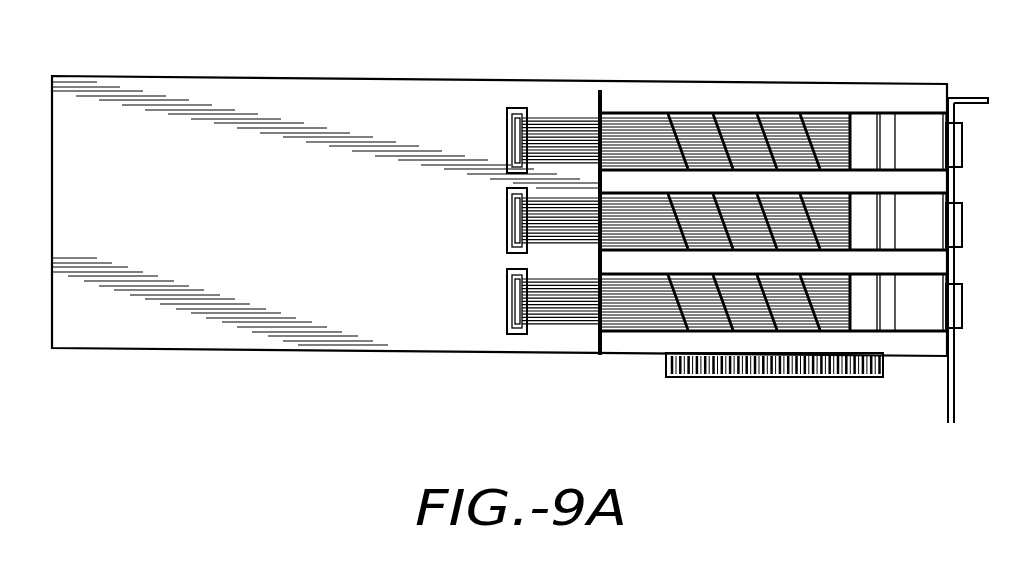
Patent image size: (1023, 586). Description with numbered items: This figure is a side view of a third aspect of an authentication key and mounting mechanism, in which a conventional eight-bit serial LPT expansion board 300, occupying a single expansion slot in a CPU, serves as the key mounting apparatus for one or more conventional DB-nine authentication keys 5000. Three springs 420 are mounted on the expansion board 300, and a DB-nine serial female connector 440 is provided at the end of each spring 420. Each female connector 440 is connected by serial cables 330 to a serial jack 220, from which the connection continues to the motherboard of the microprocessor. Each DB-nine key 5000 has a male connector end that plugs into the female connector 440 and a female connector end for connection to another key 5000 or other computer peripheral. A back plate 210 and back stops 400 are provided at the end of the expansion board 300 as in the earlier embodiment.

The expansion board 300 is at (238, 92).
The RS-232 jack 220 is at (510, 105).
The RS-232 cables 330 is at (568, 125).
The back stops 400 is at (938, 113).
The back plate 210 is at (973, 97).
The springs 420 is at (652, 332).
The DB-9 RS-232 female connector 440 is at (867, 310).
The DB-9 authentication key 5000 is at (920, 312).